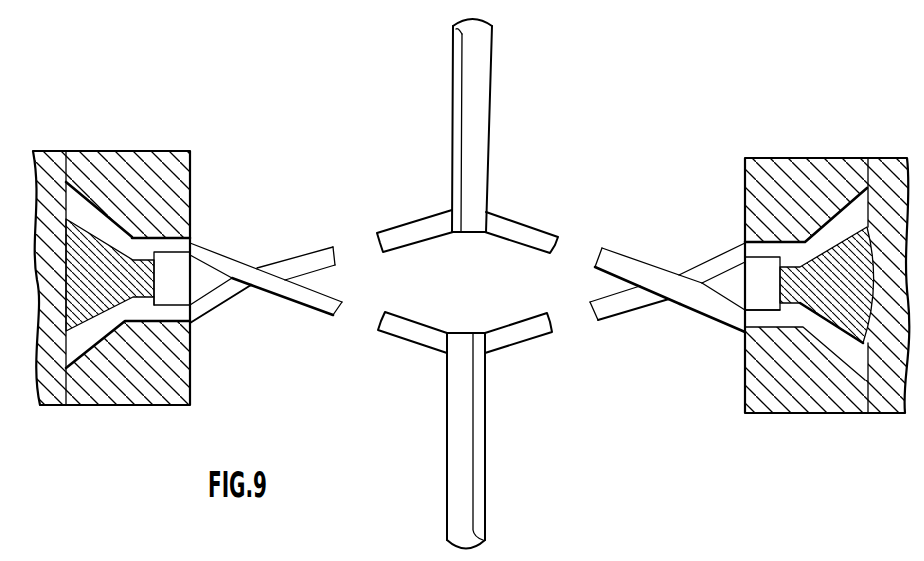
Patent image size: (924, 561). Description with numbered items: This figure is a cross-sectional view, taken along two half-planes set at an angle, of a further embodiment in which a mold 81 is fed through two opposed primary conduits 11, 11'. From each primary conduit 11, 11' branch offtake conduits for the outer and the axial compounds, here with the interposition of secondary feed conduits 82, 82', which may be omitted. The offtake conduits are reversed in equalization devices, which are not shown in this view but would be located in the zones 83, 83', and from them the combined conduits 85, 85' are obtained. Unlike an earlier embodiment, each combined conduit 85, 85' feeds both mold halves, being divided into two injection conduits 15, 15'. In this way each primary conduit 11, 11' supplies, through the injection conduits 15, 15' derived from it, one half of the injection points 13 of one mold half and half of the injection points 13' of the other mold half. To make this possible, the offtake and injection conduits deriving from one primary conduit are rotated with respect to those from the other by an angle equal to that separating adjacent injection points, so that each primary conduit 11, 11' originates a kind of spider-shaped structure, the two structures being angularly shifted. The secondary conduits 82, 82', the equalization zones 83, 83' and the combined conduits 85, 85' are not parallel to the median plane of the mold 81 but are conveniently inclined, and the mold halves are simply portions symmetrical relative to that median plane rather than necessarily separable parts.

The mold 81 is at (837, 158).
The injection points 13 is at (477, 213).
The injection points 13' is at (478, 377).
The injection conduits 15 is at (467, 240).
The injection conduits 15' is at (467, 323).
The combined conduits 85 is at (479, 255).
The combined conduits 85' is at (460, 320).
The primary conduit 11 is at (487, 125).
The primary conduit 11' is at (439, 441).
The secondary feed conduits 82 is at (471, 210).
The secondary feed conduits 82' is at (465, 361).
The zones of equalization devices 83 is at (485, 196).
The zones of equalization devices 83' is at (462, 350).